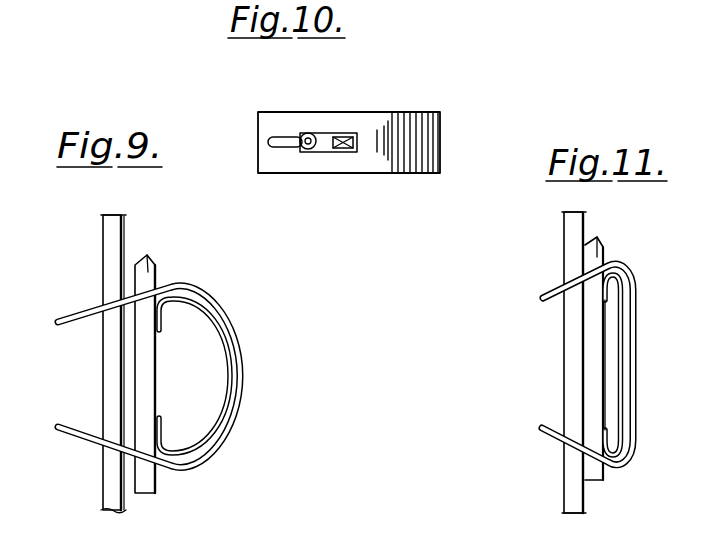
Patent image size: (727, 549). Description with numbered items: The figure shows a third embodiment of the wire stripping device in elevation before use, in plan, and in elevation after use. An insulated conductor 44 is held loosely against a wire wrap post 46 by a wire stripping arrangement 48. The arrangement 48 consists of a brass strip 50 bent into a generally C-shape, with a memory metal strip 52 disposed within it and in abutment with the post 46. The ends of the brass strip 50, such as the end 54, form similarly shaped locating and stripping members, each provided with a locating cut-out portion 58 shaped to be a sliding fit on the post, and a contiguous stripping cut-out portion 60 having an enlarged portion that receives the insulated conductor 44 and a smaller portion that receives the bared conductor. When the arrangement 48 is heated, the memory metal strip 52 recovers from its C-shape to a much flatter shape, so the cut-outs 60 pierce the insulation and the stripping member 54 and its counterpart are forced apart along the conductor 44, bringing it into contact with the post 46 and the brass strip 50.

In FIG. 9, the insulated conductor 44 is at (118, 240).
In FIG. 10, the insulated conductor 44 is at (311, 135).
In FIG. 11, the insulated conductor 44 is at (572, 230).
In FIG. 9, the wire wrap post 46 is at (148, 270).
In FIG. 10, the wire wrap post 46 is at (346, 135).
In FIG. 11, the wire wrap post 46 is at (598, 252).
In FIG. 9, the wire stripping arrangement 48 is at (164, 370).
In FIG. 9, the brass strip 50 is at (156, 379).
In FIG. 10, the brass strip 50 is at (424, 112).
In FIG. 11, the brass strip 50 is at (636, 325).
In FIG. 9, the memory metal strip 52 is at (227, 389).
In FIG. 11, the memory metal strip 52 is at (630, 400).
In FIG. 10, the end of the strip 54 is at (282, 112).
In FIG. 10, the locating cut-out portion 58 is at (323, 152).
In FIG. 10, the stripping cut-out portion 60 is at (294, 148).